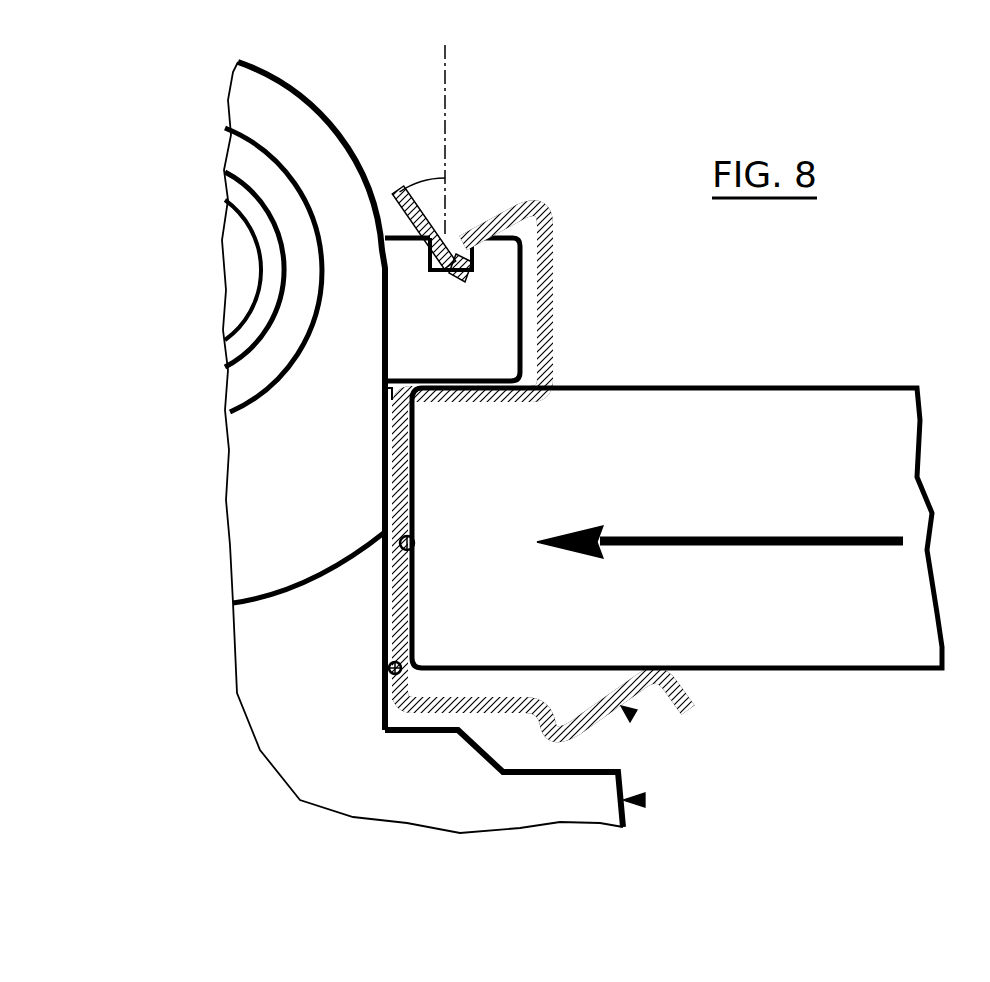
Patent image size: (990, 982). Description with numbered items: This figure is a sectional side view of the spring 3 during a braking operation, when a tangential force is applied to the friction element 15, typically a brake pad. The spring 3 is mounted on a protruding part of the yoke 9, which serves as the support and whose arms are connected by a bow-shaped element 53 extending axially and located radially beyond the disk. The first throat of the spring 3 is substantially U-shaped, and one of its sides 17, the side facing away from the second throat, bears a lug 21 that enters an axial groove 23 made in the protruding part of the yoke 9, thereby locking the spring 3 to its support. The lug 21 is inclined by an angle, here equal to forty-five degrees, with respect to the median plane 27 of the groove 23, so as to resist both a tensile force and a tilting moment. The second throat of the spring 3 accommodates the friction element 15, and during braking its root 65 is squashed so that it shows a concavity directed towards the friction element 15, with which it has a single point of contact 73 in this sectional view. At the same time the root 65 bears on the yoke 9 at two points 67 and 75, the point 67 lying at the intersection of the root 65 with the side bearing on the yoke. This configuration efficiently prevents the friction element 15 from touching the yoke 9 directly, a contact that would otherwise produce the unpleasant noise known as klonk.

The bow-shaped element 53 is at (290, 82).
The median plane 27 is at (447, 86).
The side 17 is at (390, 188).
The axial groove 23 is at (440, 264).
The lug 21 is at (463, 274).
The friction element 15 is at (760, 388).
The point 67 is at (385, 400).
The point of contact 73 is at (415, 543).
The root 65 is at (410, 590).
The point 75 is at (388, 670).
The spring 3 is at (634, 716).
The yoke 9 is at (645, 803).